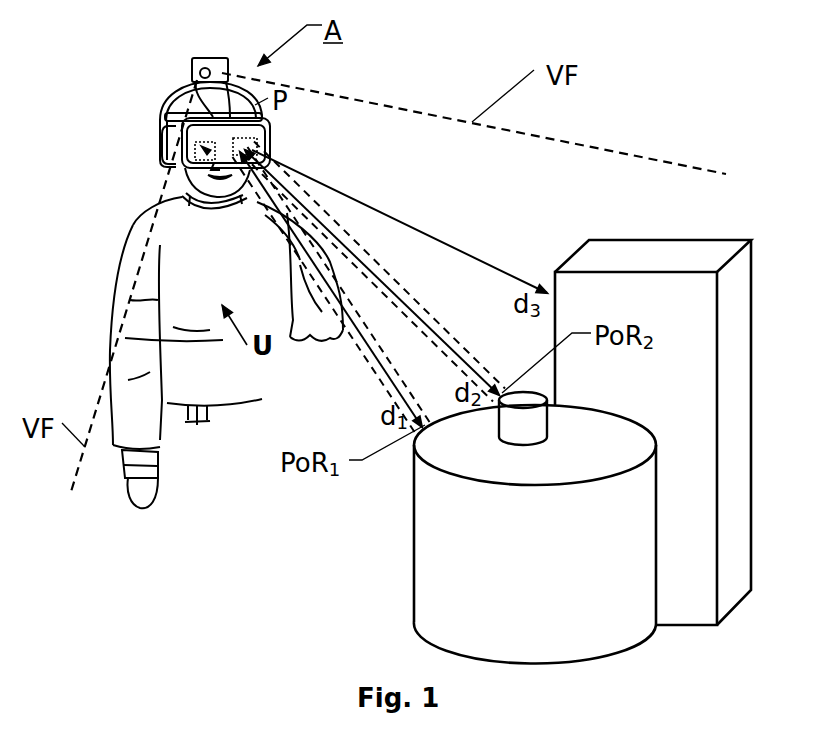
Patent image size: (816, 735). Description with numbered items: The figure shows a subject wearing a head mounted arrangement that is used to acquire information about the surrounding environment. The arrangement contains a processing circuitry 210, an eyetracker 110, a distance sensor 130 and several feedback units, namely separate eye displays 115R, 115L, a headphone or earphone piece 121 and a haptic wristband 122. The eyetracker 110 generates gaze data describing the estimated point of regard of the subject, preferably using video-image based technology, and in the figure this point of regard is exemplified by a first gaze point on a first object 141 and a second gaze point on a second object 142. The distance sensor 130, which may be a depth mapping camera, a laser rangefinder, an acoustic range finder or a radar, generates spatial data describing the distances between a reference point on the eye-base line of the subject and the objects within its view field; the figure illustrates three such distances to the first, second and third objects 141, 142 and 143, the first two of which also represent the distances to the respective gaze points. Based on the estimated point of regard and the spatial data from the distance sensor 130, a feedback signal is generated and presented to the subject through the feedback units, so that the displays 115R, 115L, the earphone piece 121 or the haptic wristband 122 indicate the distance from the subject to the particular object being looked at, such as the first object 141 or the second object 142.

The eyetracker 110 is at (266, 147).
The feedback unit (right-eye display) 115R is at (127, 127).
The feedback unit (left-eye display) 115L is at (313, 132).
The headphone/earphone piece 121 is at (163, 152).
The haptic wristband 122 is at (184, 502).
The distance sensor 130 is at (174, 45).
The first object 141 is at (467, 534).
The second object 142 is at (530, 423).
The third object 143 is at (612, 411).
The processing circuitry 210 is at (126, 98).